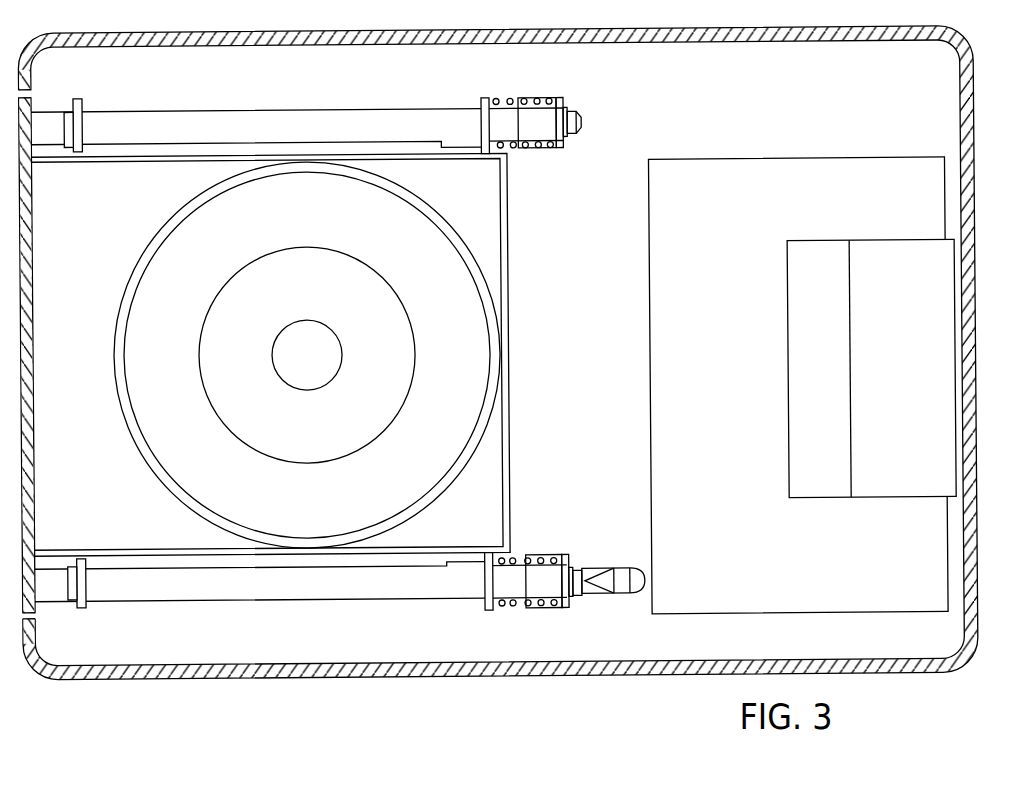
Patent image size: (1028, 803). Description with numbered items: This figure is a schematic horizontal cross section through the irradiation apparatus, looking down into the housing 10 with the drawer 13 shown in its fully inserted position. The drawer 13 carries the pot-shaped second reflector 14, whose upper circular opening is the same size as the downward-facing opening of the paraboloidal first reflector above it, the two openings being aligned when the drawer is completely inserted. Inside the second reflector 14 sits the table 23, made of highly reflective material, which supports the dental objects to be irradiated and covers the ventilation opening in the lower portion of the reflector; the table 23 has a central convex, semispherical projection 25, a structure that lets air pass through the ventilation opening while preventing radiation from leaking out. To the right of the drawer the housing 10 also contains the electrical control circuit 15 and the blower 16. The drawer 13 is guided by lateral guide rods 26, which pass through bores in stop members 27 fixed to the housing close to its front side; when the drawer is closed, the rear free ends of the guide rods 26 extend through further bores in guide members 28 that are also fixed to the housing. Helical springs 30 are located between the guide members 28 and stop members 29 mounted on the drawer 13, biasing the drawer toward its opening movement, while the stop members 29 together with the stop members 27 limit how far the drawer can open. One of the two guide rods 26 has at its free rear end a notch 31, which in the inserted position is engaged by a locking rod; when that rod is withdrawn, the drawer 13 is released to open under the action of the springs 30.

The housing 10 is at (653, 38).
The drawer 13 is at (488, 200).
The second reflector 14 is at (473, 274).
The electrical control circuit 15 is at (818, 173).
The blower 16 is at (930, 274).
The table 23 is at (378, 412).
The central convex semispherical projection 25 is at (330, 357).
The guide rod 26 is at (53, 119).
The stop member 27 is at (90, 97).
The guide member 28 is at (560, 99).
The stop member 29 is at (485, 97).
The helical spring 30 is at (512, 99).
The notch 31 is at (606, 571).